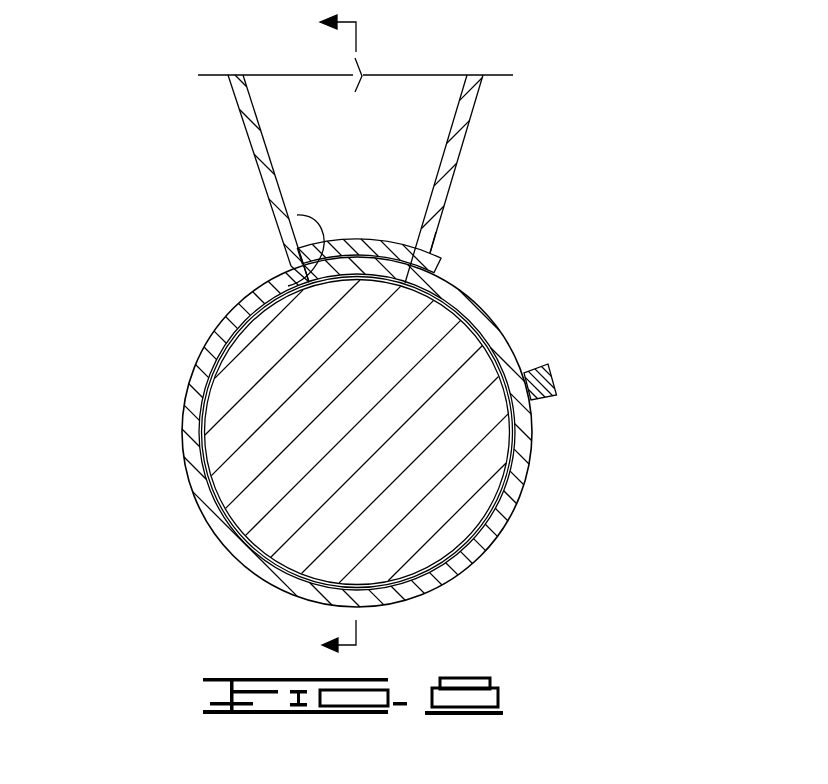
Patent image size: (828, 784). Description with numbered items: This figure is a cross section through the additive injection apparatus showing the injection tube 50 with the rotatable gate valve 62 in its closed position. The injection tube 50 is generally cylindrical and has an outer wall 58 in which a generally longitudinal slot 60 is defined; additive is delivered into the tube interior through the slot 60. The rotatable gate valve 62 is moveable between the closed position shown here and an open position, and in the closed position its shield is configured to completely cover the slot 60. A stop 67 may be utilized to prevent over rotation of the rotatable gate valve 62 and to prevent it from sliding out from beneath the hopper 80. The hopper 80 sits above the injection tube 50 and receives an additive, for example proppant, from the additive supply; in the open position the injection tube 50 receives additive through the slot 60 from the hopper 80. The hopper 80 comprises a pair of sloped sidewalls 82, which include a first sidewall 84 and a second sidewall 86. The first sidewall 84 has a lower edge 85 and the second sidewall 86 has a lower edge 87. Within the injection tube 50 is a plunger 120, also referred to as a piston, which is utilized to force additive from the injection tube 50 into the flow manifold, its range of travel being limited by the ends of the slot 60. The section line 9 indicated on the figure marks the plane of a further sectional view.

The section line 9- 9 is at (325, 336).
The injection tube 50 is at (507, 503).
The outer wall 58 is at (470, 565).
The slot 60 is at (297, 215).
The rotatable gate valve 62 is at (438, 268).
The stop 67 is at (556, 374).
The hopper 80 is at (478, 98).
The sloped sidewalls 82 is at (506, 179).
The first sidewall 84 is at (464, 150).
The lower edge 85 is at (434, 233).
The second sidewall 86 is at (253, 153).
The lower edge 87 is at (290, 285).
The plunger 120 is at (222, 448).